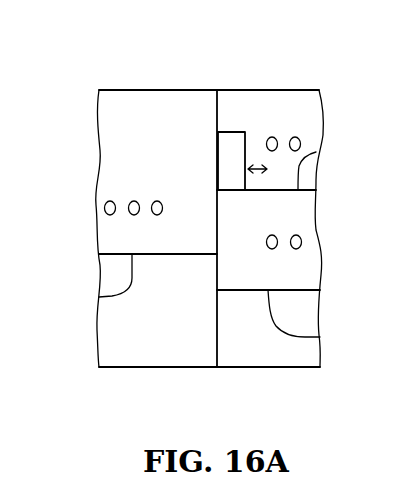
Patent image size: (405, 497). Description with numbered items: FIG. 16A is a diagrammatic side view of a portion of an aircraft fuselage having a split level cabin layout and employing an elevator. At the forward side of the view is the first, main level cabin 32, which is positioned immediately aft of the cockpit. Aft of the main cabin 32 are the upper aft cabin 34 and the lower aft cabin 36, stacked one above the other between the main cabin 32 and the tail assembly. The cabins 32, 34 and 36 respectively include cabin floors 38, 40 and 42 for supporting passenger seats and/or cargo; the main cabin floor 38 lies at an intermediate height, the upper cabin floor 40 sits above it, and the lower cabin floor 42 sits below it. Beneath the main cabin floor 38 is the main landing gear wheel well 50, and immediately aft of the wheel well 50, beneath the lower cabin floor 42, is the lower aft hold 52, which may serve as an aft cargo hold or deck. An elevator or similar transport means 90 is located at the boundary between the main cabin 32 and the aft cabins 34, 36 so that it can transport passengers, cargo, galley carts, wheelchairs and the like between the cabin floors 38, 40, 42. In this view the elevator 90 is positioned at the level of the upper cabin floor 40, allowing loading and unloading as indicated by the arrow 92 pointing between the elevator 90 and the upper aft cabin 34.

The main level cabin 32 is at (139, 120).
The upper aft cabin 34 is at (283, 108).
The lower aft cabin 36 is at (278, 268).
The main cabin floor 38 is at (100, 297).
The upper cabin floor 40 is at (318, 153).
The lower cabin floor 42 is at (322, 336).
The main landing gear wheel well 50 is at (148, 332).
The lower aft hold 52 is at (270, 340).
The elevator 90 is at (233, 147).
The arrow 92 is at (262, 172).